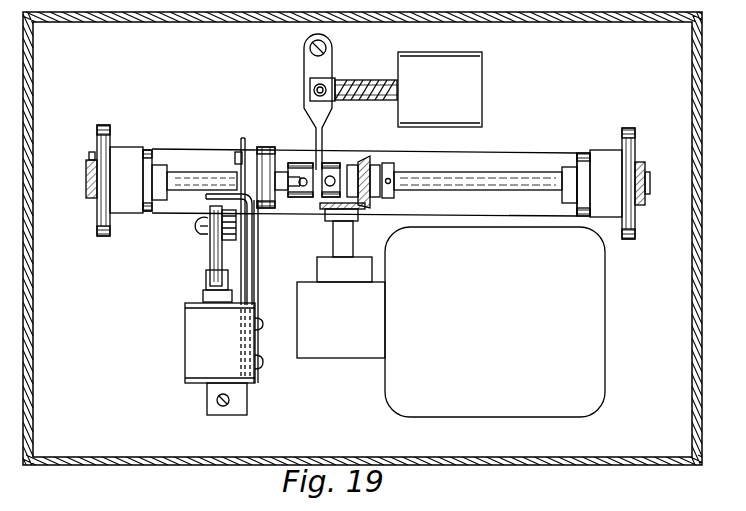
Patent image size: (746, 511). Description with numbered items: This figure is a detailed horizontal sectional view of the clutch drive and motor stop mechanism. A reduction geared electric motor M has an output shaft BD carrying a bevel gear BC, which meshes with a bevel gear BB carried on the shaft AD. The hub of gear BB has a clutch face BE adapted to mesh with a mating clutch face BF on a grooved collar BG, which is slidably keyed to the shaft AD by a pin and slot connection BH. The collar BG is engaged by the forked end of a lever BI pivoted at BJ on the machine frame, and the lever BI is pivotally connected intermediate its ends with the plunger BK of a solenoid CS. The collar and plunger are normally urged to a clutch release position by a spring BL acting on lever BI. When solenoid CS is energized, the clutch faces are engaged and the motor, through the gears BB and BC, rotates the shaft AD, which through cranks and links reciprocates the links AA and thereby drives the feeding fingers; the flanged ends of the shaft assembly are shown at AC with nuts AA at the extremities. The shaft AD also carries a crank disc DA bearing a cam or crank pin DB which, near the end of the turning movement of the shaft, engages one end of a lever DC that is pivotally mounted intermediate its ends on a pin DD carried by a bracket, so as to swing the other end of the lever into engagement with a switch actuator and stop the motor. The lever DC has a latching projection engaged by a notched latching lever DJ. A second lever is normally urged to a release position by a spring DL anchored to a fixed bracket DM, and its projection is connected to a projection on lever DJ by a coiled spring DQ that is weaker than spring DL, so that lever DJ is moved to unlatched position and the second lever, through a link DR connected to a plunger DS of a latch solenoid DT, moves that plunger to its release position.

The links AA is at (90, 178).
The flange AC is at (100, 141).
The shaft AD is at (512, 180).
The bevel gear BB is at (368, 162).
The bevel gear BC is at (358, 218).
The output shaft BD is at (350, 246).
The clutch face BE is at (350, 166).
The clutch face BF is at (333, 177).
The grooved collar BG is at (302, 170).
The pin and slot connection BH is at (306, 190).
The lever BI is at (316, 110).
The pivot BJ is at (310, 49).
The plunger BK is at (370, 80).
The spring BL is at (343, 116).
The solenoid CS is at (446, 82).
The crank disc DA is at (264, 206).
The cam or crank pin DB is at (238, 152).
The lever DC is at (246, 142).
The pin DD is at (259, 303).
The notched latching lever DJ is at (236, 232).
The spring DL is at (212, 199).
The fixed bracket DM is at (263, 342).
The coiled spring DQ is at (199, 228).
The link DR is at (210, 262).
The plunger DS is at (205, 295).
The solenoid DT is at (186, 334).
The reduction geared electric motor M is at (484, 266).